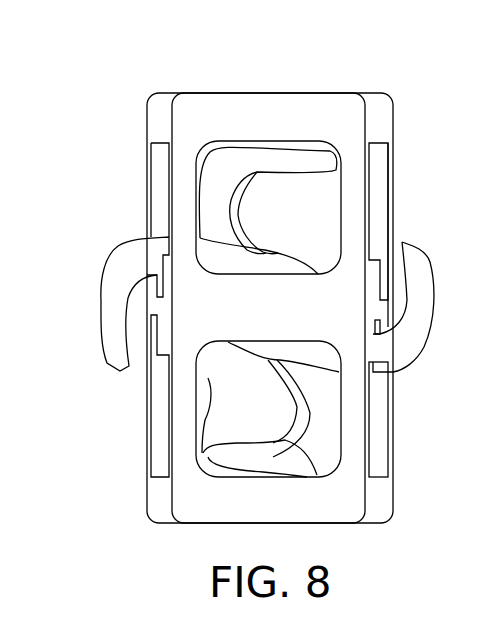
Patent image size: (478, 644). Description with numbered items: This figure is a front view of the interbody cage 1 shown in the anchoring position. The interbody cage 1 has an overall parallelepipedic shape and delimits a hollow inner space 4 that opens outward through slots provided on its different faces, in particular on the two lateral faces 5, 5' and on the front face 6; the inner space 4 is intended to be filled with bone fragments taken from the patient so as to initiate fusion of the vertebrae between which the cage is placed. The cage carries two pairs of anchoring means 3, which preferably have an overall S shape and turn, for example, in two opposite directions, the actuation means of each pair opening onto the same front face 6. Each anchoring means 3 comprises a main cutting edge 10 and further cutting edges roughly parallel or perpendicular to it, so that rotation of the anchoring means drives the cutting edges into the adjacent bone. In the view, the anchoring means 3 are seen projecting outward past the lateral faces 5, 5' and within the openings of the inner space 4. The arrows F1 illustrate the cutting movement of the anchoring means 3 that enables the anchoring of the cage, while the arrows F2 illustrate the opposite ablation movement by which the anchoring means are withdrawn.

The interbody cage 1 is at (126, 76).
The anchoring means 3 is at (103, 262).
The hollow inner space 4 is at (283, 183).
The lateral face 5 is at (129, 300).
The lateral face 5' is at (404, 277).
The front face 6 is at (325, 93).
The main cutting edge 10 is at (330, 171).
The arrows F1 is at (83, 322).
The arrows F2 is at (83, 272).